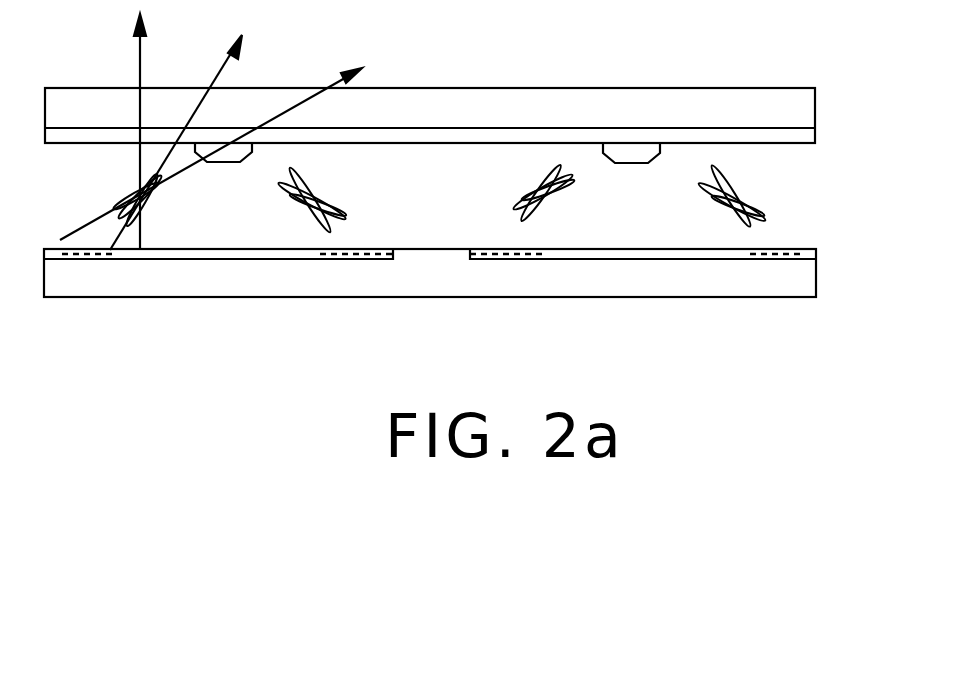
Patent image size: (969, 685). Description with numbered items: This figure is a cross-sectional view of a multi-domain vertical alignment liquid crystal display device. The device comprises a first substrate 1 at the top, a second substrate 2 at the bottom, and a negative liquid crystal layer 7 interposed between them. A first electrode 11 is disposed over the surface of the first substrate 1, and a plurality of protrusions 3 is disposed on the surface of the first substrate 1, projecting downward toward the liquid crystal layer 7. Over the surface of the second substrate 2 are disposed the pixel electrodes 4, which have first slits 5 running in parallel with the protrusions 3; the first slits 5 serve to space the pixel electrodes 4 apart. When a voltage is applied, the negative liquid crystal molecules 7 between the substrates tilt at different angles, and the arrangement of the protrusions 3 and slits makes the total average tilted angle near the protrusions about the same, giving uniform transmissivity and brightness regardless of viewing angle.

The first substrate 1 is at (800, 105).
The first electrode 11 is at (800, 138).
The second substrate 2 is at (802, 285).
The protrusions 3 is at (632, 157).
The pixel electrodes 4 is at (805, 252).
The first slits 5 is at (433, 252).
The negative liquid crystal layer 7 is at (540, 182).